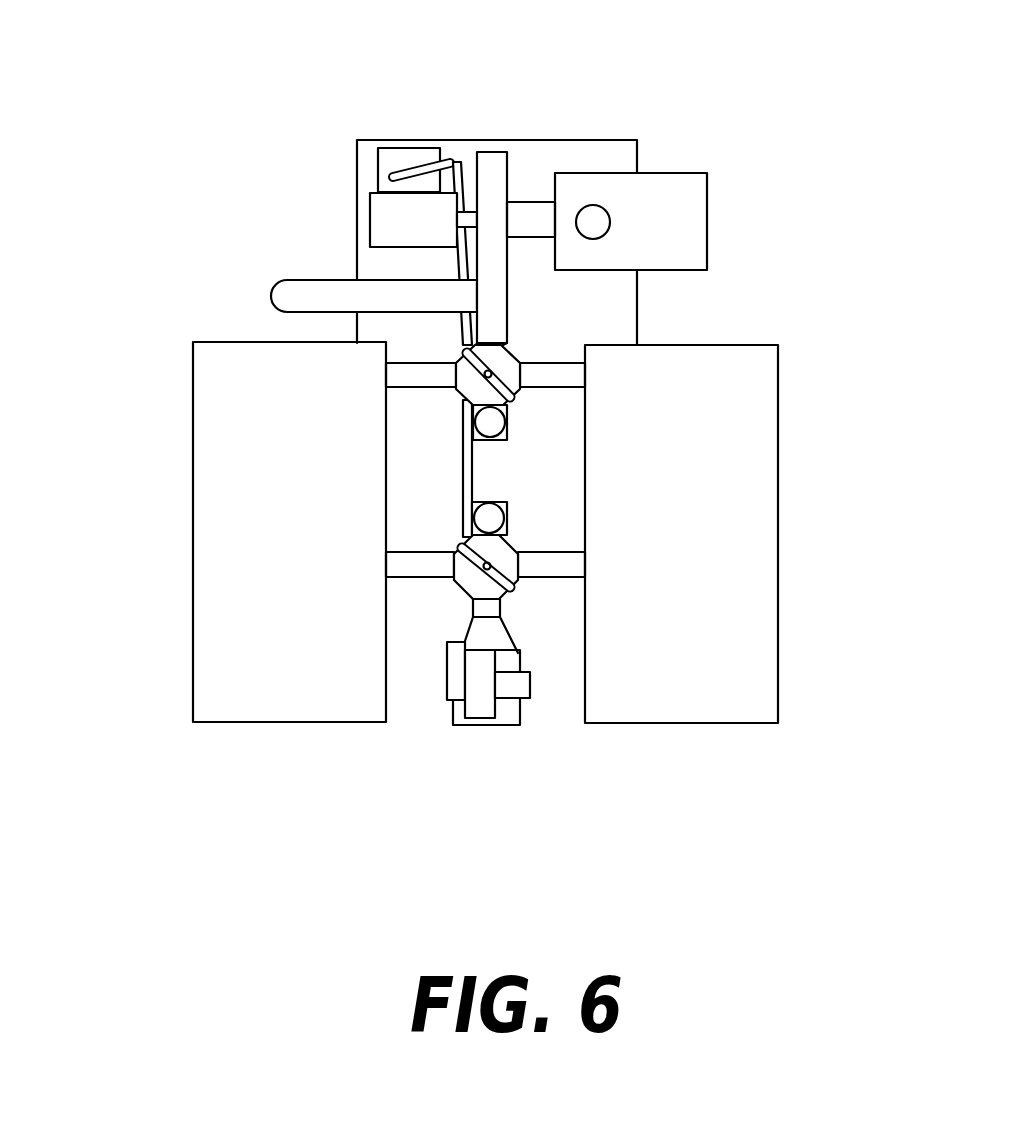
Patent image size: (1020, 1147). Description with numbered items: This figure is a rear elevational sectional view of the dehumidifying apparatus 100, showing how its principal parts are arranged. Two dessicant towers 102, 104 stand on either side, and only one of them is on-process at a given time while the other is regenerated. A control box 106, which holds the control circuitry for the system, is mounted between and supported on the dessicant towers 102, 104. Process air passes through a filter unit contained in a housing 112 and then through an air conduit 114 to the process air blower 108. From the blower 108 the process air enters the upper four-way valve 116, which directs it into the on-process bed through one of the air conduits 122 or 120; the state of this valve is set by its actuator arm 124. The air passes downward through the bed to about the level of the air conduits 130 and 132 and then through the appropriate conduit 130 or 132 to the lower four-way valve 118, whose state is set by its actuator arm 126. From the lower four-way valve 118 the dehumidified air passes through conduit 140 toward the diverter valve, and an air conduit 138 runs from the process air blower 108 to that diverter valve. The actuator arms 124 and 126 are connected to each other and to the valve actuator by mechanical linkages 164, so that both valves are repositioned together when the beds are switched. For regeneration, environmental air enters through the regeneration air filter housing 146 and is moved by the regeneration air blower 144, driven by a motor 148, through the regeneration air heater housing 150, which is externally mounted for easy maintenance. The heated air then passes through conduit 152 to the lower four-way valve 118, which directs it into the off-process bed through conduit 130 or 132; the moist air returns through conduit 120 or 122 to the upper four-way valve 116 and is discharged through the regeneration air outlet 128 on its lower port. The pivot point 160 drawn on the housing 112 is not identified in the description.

The dehumidifying apparatus 100 is at (724, 106).
The dessicant tower 102 is at (778, 676).
The dessicant tower 104 is at (193, 702).
The control box 106 is at (356, 150).
The process air blower 108 is at (492, 163).
The housing 112 is at (707, 250).
The air conduit 114 is at (528, 202).
The upper 4-way valve 116 is at (510, 393).
The lower 4-way valve 118 is at (511, 584).
The air conduit 120 is at (550, 365).
The air conduit 122 is at (410, 363).
The actuator arm 124 is at (520, 378).
The actuator arm 126 is at (523, 565).
The regeneration air outlet 128 is at (470, 422).
The air conduit 130 is at (557, 553).
The air conduit 132 is at (396, 575).
The air conduit 138 is at (356, 273).
The conduit 140 is at (470, 518).
The regeneration air blower 144 is at (478, 720).
The regeneration air filter housing 146 is at (447, 686).
The motor 148 is at (497, 700).
The regeneration air heater housing 150 is at (525, 700).
The conduit 152 is at (470, 598).
The pivot 160 is at (612, 220).
The mechanical linkages 164 is at (458, 162).